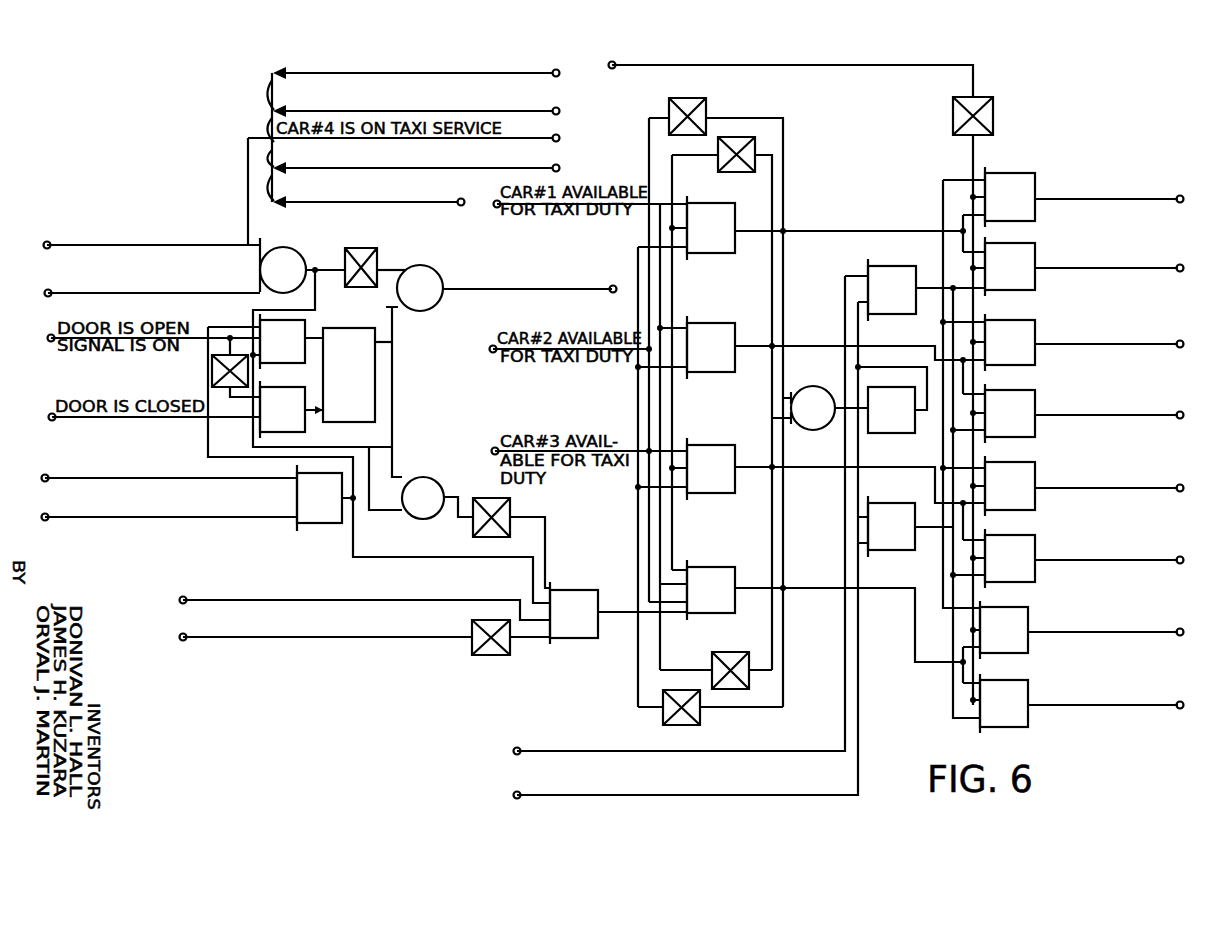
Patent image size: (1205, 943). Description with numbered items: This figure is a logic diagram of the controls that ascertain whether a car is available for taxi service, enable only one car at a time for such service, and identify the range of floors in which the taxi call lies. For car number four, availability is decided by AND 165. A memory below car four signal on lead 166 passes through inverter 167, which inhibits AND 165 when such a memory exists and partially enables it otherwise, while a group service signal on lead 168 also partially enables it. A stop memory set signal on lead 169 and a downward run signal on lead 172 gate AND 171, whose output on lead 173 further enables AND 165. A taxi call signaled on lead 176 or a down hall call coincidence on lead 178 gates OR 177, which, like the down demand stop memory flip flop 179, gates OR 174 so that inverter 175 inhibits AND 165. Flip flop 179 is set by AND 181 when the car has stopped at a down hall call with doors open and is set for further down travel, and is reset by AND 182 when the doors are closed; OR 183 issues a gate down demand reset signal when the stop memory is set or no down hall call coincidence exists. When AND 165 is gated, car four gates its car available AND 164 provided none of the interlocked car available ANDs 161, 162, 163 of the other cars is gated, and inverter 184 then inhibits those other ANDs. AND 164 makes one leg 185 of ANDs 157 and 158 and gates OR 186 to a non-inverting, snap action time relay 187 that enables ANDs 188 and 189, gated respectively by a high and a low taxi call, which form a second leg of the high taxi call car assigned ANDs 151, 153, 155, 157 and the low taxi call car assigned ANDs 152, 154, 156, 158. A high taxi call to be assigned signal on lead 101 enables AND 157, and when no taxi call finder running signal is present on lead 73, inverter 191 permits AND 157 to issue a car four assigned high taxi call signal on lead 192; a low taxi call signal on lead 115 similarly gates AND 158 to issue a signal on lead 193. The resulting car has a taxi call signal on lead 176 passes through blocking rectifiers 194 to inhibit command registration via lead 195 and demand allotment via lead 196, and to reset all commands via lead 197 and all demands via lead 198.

The lead 73 is at (625, 68).
The lead 101 is at (620, 797).
The lead 115 is at (620, 753).
The high taxi call car assigned AND 151 is at (1084, 197).
The low taxi call car assigned AND 152 is at (1084, 266).
The high taxi call car assigned AND 153 is at (1084, 342).
The low taxi call car assigned AND 154 is at (1084, 413).
The high taxi call car assigned AND 155 is at (1084, 486).
The low taxi call car assigned AND 156 is at (1084, 558).
The high taxi call car assigned AND 157 is at (1004, 630).
The low taxi call car assigned AND 158 is at (1004, 703).
The car available AND 161 is at (802, 228).
The car available AND 162 is at (802, 347).
The car available AND 163 is at (802, 472).
The car available AND 164 is at (692, 590).
The AND 165 is at (618, 613).
The lead 166 is at (380, 640).
The inverter 167 is at (472, 628).
The lead 168 is at (447, 598).
The lead 169 is at (165, 520).
The AND 171 is at (326, 498).
The lead 172 is at (250, 484).
The lead 173 is at (383, 557).
The OR 174 is at (423, 498).
The inverter 175 is at (510, 506).
The lead 176 is at (165, 248).
The OR 177 is at (277, 215).
The lead 178 is at (250, 292).
The down demand stop memory flip flop 179 is at (335, 328).
The AND 181 is at (286, 341).
The AND 182 is at (291, 409).
The OR 183 is at (507, 288).
The inverter 184 is at (700, 715).
The leg 185 is at (915, 615).
The OR 186 is at (820, 408).
The time relay 187 is at (891, 398).
The AND 188 is at (900, 290).
The AND 189 is at (905, 526).
The inverter 191 is at (953, 118).
The lead 192 is at (1168, 634).
The lead 193 is at (1168, 707).
The blocking rectifiers 194 is at (268, 138).
The lead 195 is at (488, 75).
The lead 196 is at (398, 204).
The lead 197 is at (500, 113).
The lead 198 is at (452, 170).